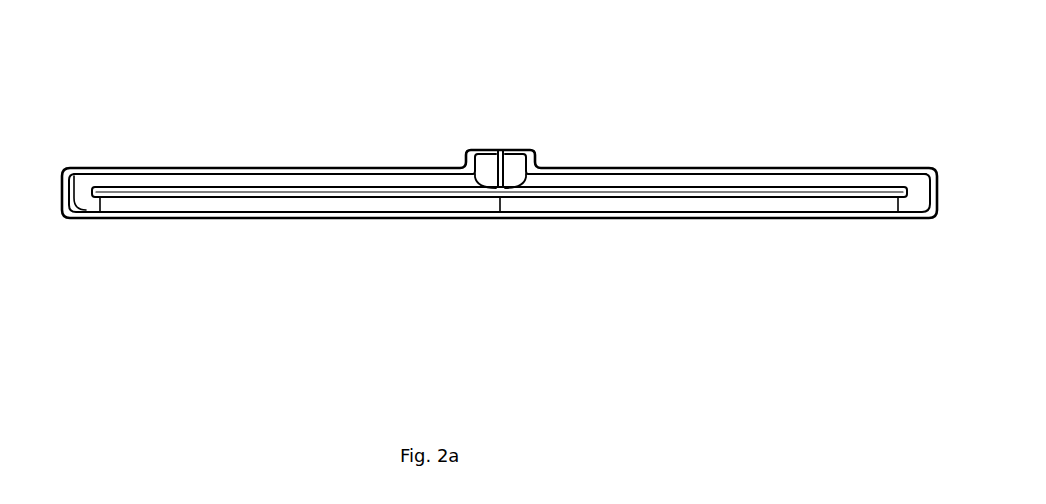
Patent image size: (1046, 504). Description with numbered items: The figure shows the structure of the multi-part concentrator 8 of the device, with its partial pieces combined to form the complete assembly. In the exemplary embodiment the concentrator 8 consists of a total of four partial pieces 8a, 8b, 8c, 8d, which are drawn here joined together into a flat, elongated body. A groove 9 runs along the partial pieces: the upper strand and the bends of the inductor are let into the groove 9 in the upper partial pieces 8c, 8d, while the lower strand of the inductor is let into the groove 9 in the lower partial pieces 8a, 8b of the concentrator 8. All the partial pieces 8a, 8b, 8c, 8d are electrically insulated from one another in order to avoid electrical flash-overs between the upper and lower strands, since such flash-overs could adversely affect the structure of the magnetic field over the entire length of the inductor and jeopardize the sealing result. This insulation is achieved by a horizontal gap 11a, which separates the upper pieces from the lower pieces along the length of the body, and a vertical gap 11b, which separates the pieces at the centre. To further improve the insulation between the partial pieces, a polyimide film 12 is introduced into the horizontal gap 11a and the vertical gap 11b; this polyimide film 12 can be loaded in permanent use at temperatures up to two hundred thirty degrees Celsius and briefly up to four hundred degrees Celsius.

The concentrator 8 is at (613, 140).
The partial piece 8a is at (378, 203).
The partial piece 8b is at (647, 203).
The partial piece 8c is at (263, 180).
The partial piece 8d is at (807, 182).
The groove 9 is at (293, 203).
The horizontal gap 11a is at (191, 187).
The vertical gap 11b is at (506, 180).
The polyimide film 12 is at (500, 186).